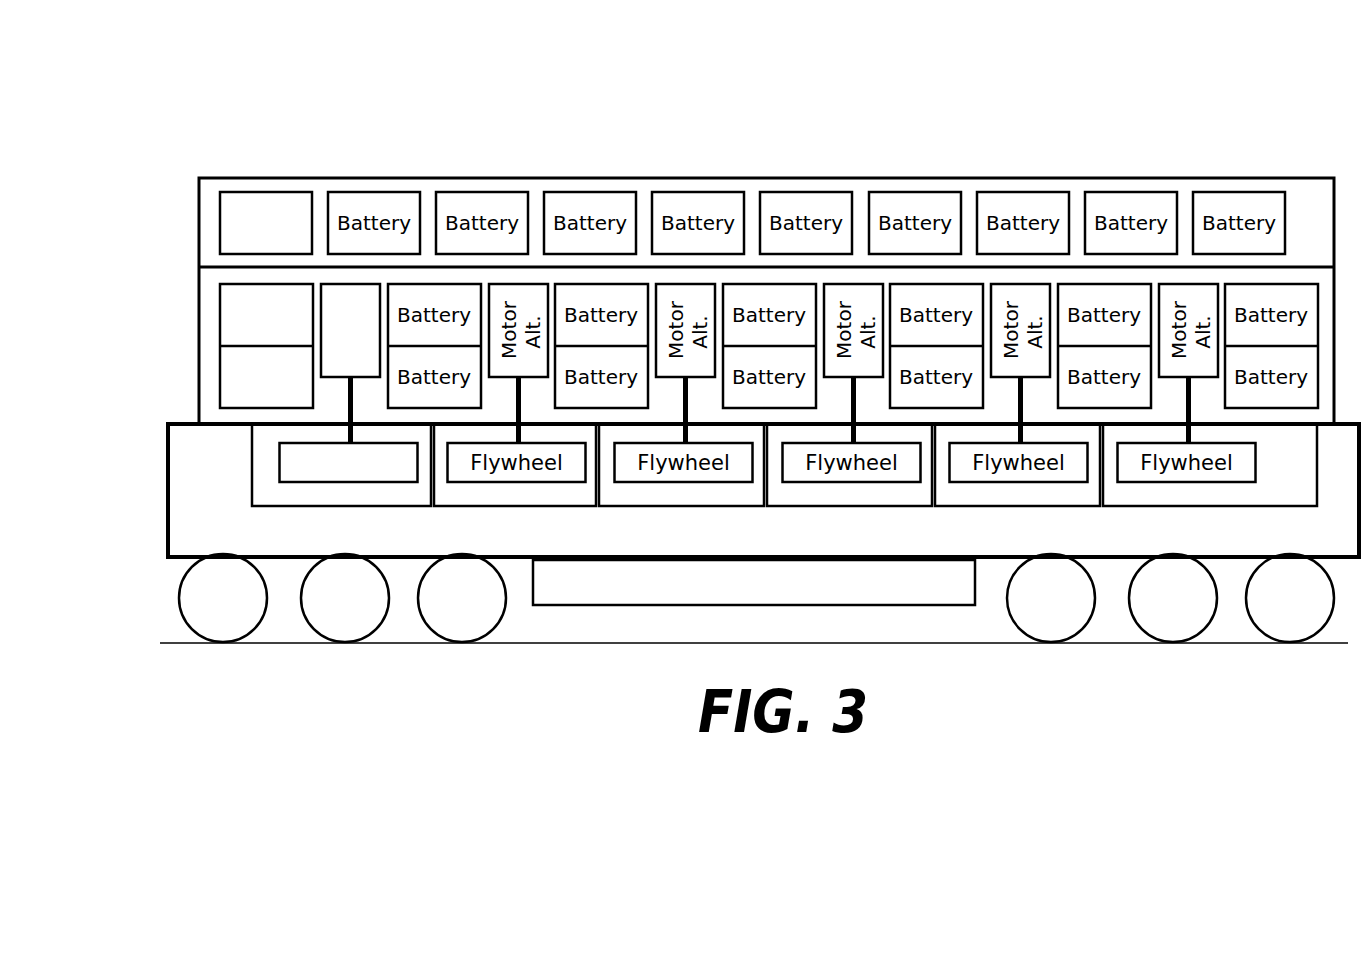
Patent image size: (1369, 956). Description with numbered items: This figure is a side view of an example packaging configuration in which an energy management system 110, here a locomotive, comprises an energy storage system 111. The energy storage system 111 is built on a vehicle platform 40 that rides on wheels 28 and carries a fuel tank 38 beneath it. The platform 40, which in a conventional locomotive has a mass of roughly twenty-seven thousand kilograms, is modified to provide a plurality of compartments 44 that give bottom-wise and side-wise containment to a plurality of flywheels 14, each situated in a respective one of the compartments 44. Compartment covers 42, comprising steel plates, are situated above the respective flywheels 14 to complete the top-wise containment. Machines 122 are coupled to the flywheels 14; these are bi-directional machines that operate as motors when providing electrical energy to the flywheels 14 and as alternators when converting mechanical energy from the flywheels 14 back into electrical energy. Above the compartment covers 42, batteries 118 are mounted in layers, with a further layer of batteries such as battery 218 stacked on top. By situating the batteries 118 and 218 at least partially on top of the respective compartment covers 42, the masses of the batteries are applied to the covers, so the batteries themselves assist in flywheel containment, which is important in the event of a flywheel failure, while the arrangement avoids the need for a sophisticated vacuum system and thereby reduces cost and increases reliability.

The energy management system 110 is at (1238, 163).
The energy storage system 111 is at (168, 455).
The batteries 118 is at (222, 380).
The machines 122 is at (367, 310).
The battery 218 is at (280, 205).
The flywheels 14 is at (280, 466).
The wheels 28 is at (223, 598).
The fuel tank 38 is at (754, 582).
The vehicle platform 40 is at (167, 512).
The compartment covers 42 is at (313, 426).
The compartments 44 is at (422, 507).